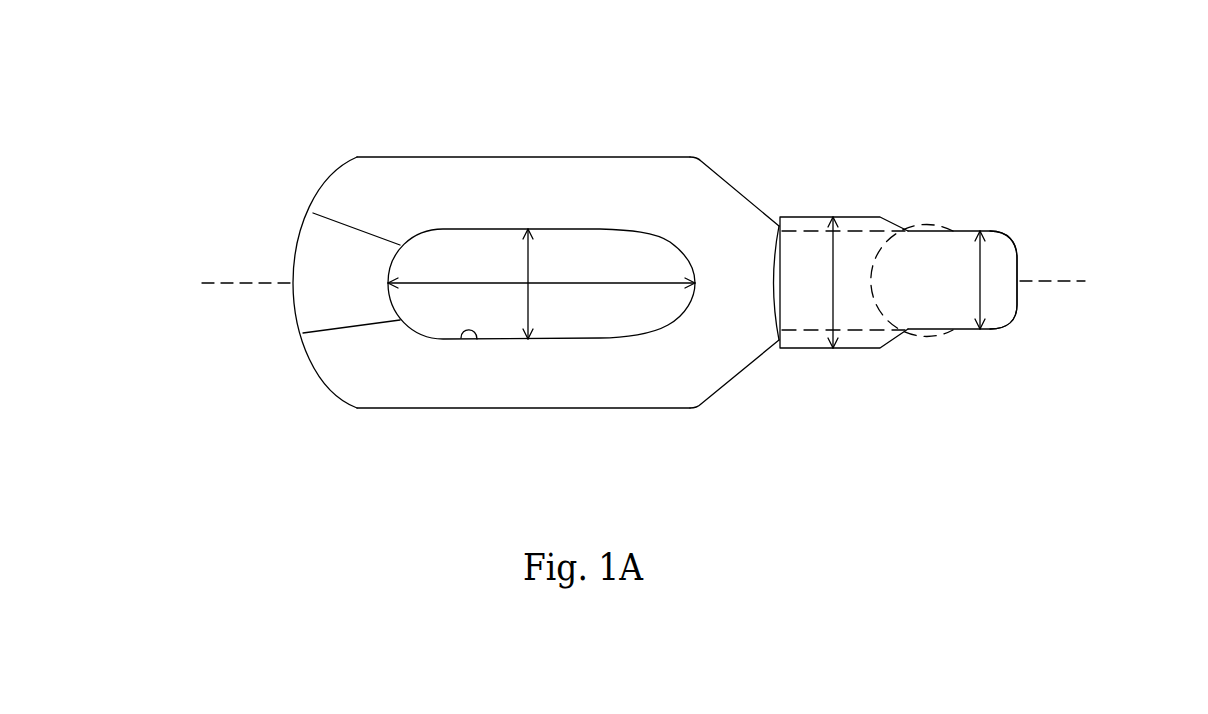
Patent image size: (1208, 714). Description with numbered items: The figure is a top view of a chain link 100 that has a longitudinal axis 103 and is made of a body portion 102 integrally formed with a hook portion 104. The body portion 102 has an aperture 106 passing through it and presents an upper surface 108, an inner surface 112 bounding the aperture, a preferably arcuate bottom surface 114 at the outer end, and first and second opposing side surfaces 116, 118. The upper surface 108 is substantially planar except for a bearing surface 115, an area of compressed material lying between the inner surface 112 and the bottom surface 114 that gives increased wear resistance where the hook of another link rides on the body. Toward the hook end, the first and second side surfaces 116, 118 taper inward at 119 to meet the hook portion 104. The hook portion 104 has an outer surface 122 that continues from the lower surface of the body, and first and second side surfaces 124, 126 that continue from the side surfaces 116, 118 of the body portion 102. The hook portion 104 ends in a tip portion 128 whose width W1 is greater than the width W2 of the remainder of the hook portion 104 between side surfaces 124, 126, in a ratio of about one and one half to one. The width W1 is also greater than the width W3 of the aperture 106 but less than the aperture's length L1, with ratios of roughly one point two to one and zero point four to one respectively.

The chain link 100 is at (372, 436).
The body portion 102 is at (303, 287).
The longitudinal axis 103 is at (214, 283).
The hook portion 104 is at (1000, 257).
The aperture 106 is at (580, 285).
The upper surface 108 is at (513, 114).
The inner surface 112 is at (461, 339).
The bottom surface 114 is at (300, 237).
The bearing surface 115 is at (310, 313).
The first side surface 116 is at (605, 158).
The second side surface 118 is at (642, 408).
The taper 119 is at (757, 207).
The outer surface 122 is at (1018, 297).
The first side surface 124 is at (1029, 278).
The second side surface 126 is at (942, 332).
The tip portion 128 is at (844, 294).
The width of tip portion W1 is at (847, 242).
The width of hook portion W2 is at (1000, 257).
The width of aperture W3 is at (530, 322).
The length of aperture L1 is at (491, 283).